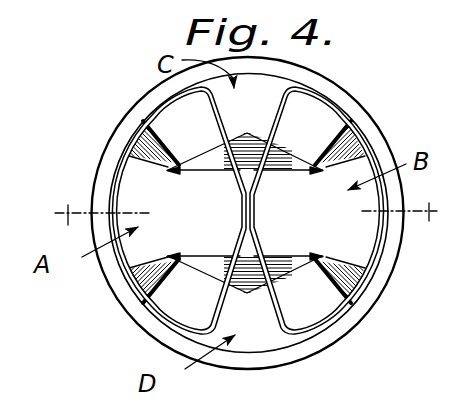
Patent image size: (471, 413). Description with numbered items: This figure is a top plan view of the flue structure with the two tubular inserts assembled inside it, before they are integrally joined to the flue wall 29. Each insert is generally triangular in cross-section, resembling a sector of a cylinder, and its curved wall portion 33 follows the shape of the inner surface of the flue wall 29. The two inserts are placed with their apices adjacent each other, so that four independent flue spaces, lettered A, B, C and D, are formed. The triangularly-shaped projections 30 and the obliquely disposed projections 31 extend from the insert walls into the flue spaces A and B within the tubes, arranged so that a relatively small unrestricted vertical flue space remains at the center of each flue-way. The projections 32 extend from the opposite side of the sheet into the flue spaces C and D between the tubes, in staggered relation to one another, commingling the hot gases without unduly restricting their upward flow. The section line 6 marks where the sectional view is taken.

The flue wall 29 is at (137, 103).
The curved wall portion 33 is at (118, 174).
The triangularly-shaped projections 30 is at (212, 262).
The obliquely disposed projections 31 is at (167, 166).
The outwardly extending projections 32 is at (262, 139).
The section line 6- 6 is at (244, 214).